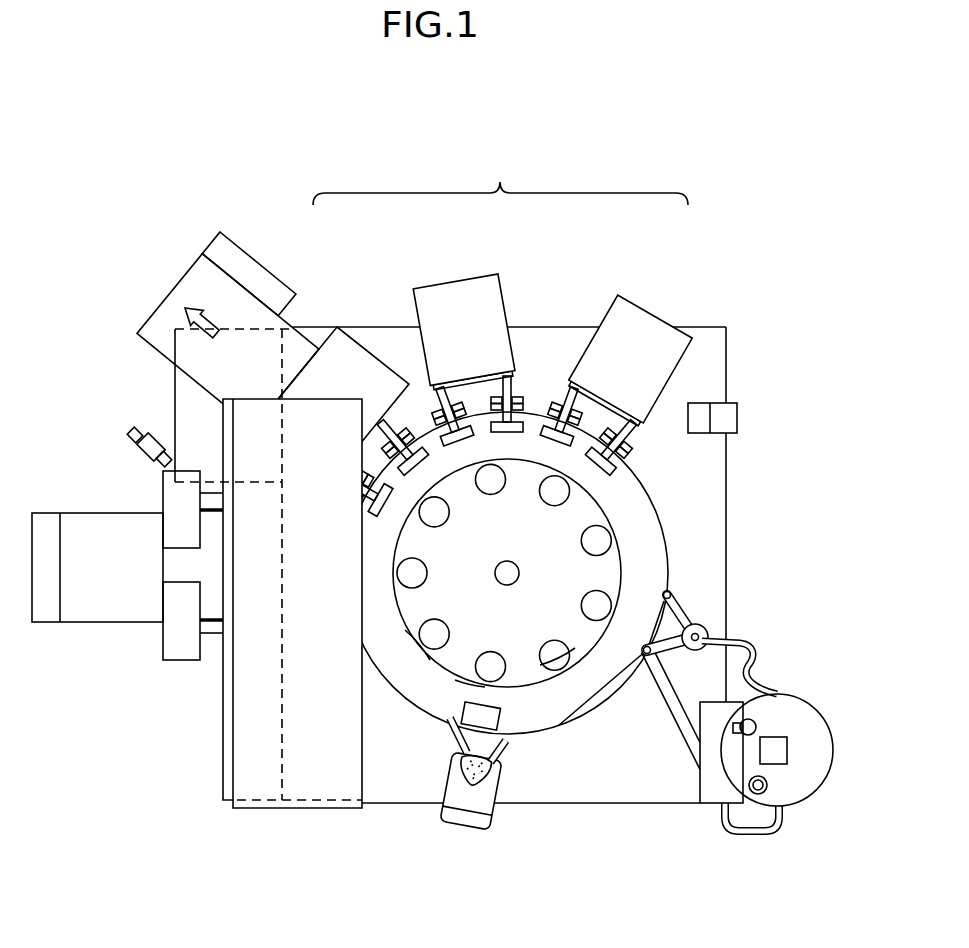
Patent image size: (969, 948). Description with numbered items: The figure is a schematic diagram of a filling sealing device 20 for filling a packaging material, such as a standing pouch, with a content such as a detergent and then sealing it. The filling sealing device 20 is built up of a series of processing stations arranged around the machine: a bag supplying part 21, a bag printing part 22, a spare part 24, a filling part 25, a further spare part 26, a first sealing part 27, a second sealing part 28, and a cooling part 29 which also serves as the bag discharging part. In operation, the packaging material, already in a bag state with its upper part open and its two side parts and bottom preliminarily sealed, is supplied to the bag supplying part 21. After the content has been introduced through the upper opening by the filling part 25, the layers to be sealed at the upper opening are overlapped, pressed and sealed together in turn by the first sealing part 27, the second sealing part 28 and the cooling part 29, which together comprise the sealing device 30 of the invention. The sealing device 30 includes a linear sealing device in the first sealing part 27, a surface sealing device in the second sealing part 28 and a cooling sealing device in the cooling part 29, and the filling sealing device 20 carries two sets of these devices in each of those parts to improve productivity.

The filling sealing device 20 is at (171, 172).
The bag supplying part 21 is at (390, 571).
The bag printing part 22 is at (415, 650).
The spare part 24 is at (564, 680).
The filling part 25 is at (689, 590).
The spare part 26 is at (625, 537).
The first sealing part 27 is at (627, 383).
The second sealing part 28 is at (467, 310).
The cooling part 29 is at (377, 386).
The sealing device 30 is at (485, 332).